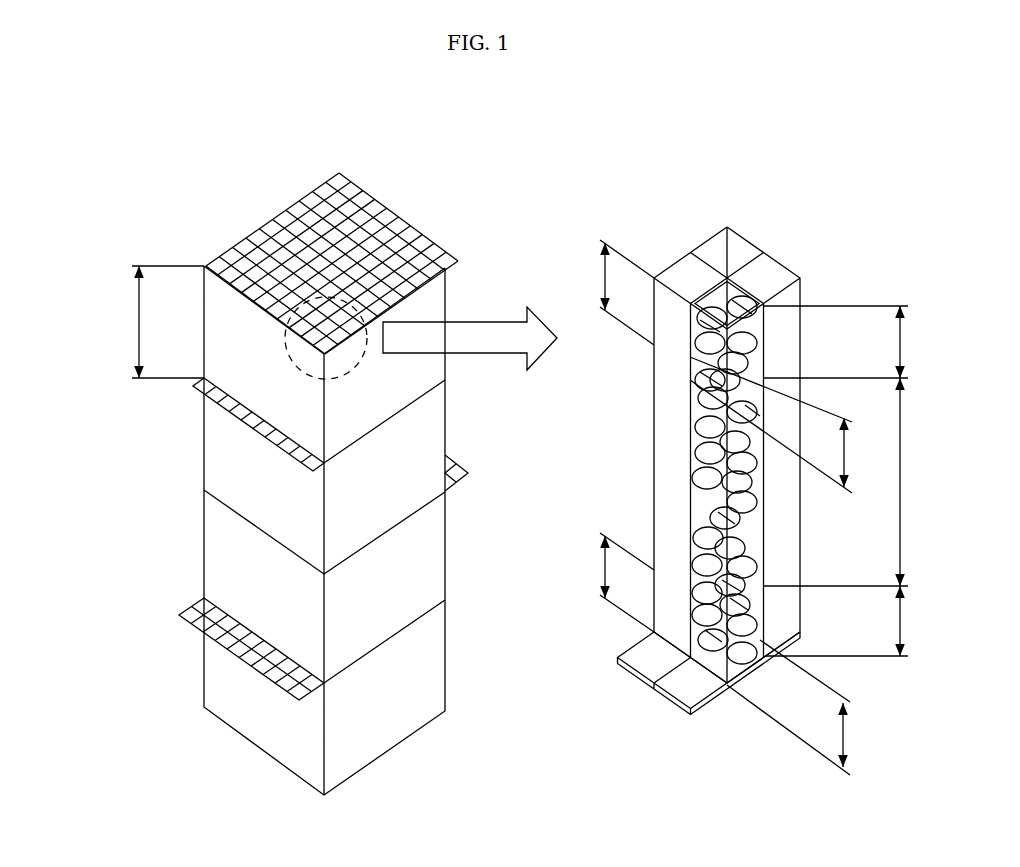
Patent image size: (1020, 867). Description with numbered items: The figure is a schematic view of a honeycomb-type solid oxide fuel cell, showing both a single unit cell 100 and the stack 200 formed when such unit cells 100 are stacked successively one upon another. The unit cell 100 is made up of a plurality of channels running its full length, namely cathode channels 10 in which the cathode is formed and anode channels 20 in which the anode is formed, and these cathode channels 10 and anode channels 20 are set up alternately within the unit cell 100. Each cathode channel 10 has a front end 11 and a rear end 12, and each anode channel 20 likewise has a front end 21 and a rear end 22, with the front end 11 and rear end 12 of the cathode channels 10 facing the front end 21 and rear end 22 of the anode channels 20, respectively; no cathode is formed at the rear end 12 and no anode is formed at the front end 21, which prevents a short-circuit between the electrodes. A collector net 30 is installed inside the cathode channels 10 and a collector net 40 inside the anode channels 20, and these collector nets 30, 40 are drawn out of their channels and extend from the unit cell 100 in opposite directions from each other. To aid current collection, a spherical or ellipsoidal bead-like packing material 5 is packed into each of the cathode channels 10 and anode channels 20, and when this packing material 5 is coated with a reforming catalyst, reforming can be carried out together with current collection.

The unit cell 100 is at (227, 264).
The stack 200 is at (293, 478).
The collector net 40 is at (455, 260).
The cathode channels 10 is at (752, 480).
The anode channels 20 is at (716, 281).
The packing material 5 is at (752, 300).
The collector net 30 is at (703, 703).
The front end 11 is at (615, 292).
The rear end 12 is at (615, 582).
The front end 21 is at (783, 425).
The rear end 22 is at (801, 707).